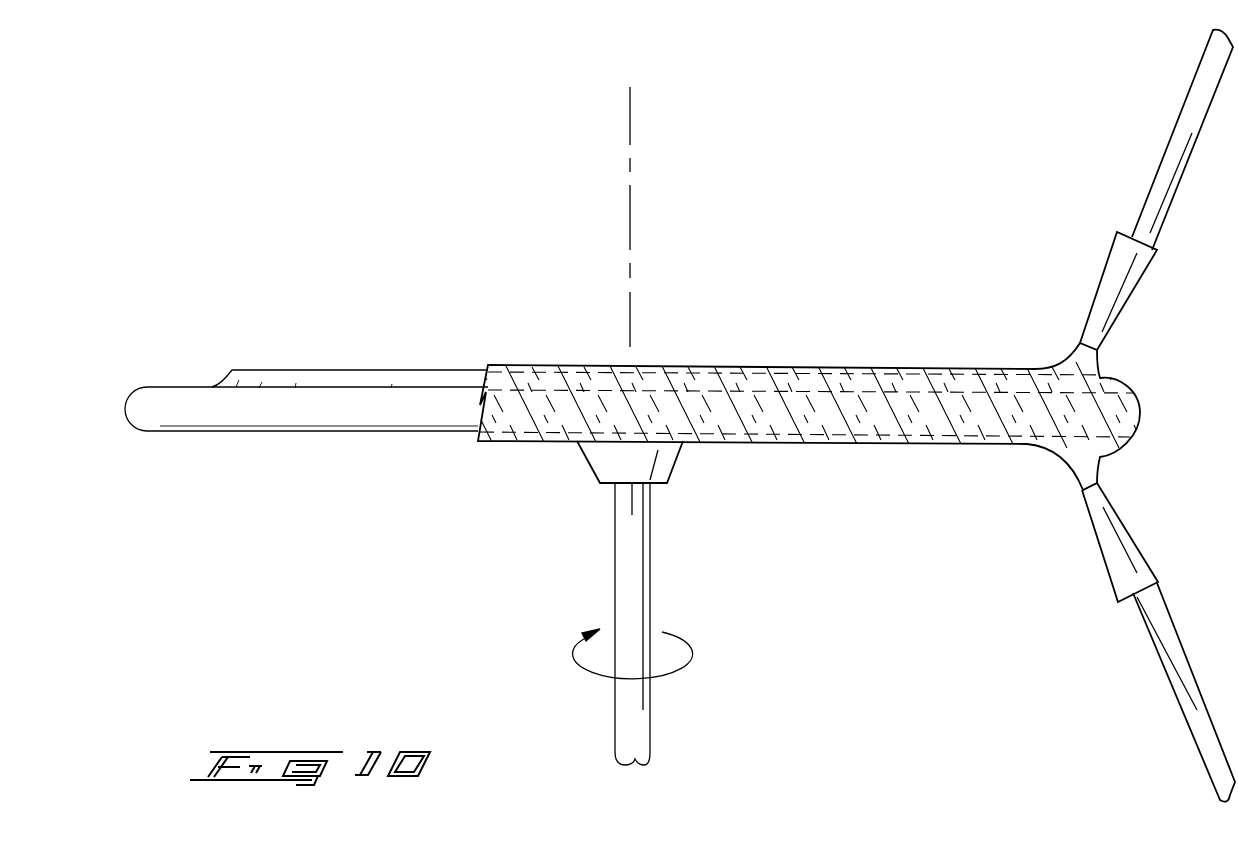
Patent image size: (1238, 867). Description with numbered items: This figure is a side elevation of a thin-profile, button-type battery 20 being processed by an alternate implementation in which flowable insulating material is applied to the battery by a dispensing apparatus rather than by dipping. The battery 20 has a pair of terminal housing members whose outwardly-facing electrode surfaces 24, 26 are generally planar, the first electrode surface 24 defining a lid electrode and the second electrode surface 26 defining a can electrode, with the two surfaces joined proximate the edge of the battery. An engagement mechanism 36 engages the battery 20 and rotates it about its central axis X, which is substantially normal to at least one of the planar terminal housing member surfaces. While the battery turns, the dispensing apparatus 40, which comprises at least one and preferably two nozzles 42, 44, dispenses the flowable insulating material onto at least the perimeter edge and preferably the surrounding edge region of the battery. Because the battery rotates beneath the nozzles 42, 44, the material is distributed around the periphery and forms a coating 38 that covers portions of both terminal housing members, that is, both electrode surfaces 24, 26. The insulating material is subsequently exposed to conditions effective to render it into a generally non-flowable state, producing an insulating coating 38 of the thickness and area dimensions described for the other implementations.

The battery 20 is at (171, 285).
The first electrode surface 24 is at (375, 370).
The second electrode surface 26 is at (342, 433).
The engagement mechanism 36 is at (615, 563).
The coating 38 is at (845, 367).
The dispensing apparatus 40 is at (1109, 190).
The nozzle 42 is at (1112, 283).
The nozzle 44 is at (1113, 553).
The central axis X is at (631, 214).